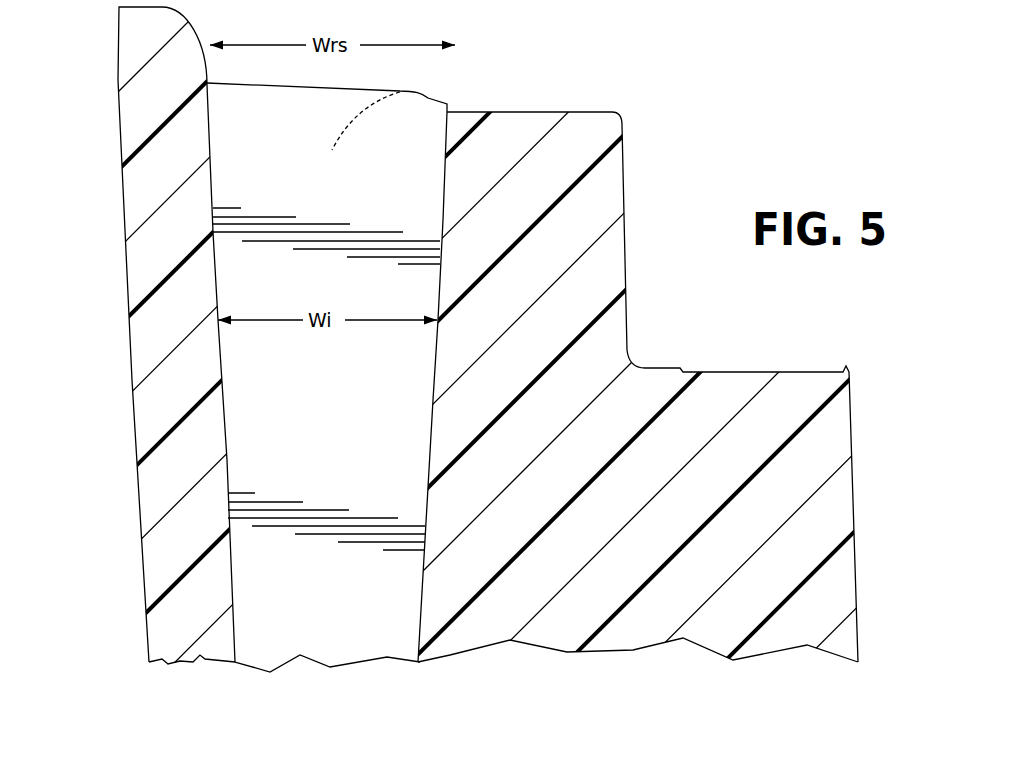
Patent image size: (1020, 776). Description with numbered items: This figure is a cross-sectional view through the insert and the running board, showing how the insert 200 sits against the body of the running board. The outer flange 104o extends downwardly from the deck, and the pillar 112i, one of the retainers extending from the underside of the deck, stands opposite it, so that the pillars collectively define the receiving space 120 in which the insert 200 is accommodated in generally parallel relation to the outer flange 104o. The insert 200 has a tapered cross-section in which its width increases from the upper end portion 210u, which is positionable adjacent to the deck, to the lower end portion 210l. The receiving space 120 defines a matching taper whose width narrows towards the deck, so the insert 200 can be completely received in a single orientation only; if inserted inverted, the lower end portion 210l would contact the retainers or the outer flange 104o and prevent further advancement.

The outer flange 104o is at (155, 110).
The pillar 112i is at (587, 208).
The receiving space 120 is at (400, 92).
The insert 200 is at (385, 373).
The lower end portion 210l is at (407, 173).
The upper end portion 210u is at (387, 593).